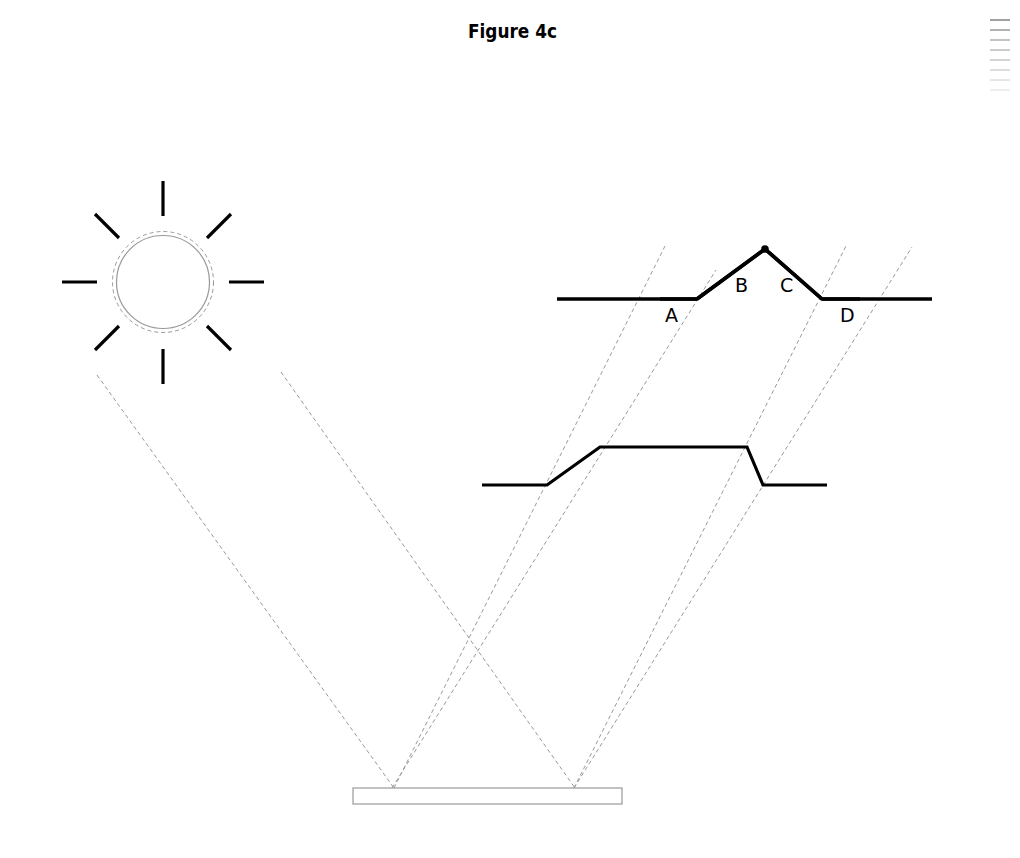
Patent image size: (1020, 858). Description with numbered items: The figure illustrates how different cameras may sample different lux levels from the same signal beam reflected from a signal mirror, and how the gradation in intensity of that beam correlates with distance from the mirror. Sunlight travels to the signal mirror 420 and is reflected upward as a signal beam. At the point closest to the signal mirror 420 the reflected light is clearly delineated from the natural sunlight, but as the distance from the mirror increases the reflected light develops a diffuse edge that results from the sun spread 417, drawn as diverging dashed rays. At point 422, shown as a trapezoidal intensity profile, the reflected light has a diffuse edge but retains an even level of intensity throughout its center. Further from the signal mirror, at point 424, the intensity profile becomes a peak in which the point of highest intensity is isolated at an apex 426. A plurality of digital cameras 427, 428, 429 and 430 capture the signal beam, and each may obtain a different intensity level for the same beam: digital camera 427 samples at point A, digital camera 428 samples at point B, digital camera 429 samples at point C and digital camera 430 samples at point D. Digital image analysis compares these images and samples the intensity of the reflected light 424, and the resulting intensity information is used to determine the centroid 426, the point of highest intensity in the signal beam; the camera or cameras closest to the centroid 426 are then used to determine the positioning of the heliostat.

The sun spread 417 is at (705, 558).
The signal mirror 420 is at (637, 804).
The point 422 is at (477, 482).
The point 424 is at (547, 298).
The apex 426 is at (765, 249).
The digital camera 427 is at (671, 298).
The digital camera 428 is at (737, 268).
The digital camera 429 is at (795, 272).
The digital camera 430 is at (845, 300).